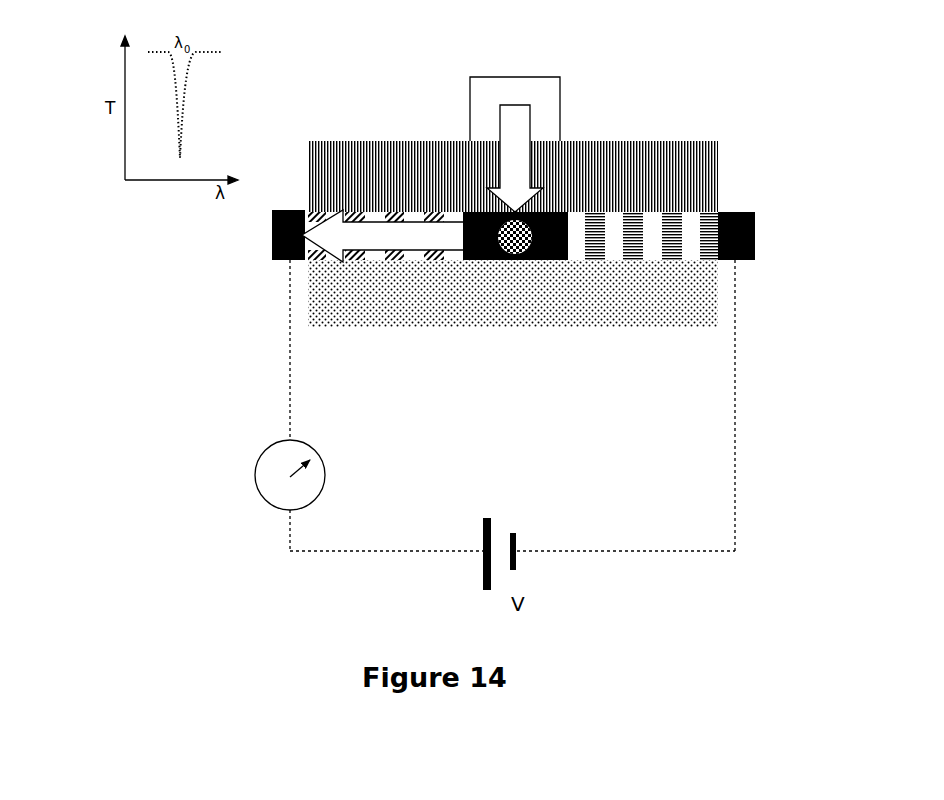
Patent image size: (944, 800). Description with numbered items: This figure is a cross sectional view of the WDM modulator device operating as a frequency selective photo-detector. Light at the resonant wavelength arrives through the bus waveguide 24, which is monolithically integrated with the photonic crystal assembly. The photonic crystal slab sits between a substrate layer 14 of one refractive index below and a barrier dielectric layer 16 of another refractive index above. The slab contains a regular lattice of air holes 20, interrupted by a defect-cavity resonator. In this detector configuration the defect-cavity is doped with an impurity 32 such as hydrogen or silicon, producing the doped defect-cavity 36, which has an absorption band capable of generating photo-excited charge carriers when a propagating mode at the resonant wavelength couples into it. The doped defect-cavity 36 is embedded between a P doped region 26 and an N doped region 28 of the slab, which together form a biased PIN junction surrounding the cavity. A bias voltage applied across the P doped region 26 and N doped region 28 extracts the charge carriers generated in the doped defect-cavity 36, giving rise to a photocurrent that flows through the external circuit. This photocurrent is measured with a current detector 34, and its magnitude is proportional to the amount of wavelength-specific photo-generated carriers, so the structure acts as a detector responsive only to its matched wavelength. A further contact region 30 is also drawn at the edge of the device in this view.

The substrate layer 14 is at (692, 282).
The barrier dielectric layer 16 is at (705, 175).
The air holes 20 is at (372, 260).
The bus waveguide 24 is at (550, 97).
The P doped region 26 is at (432, 260).
The N doped region 28 is at (600, 257).
The right electrode 30 is at (753, 227).
The impurity 32 is at (510, 260).
The current detector 34 is at (260, 458).
The doped defect-cavity 36 is at (545, 260).